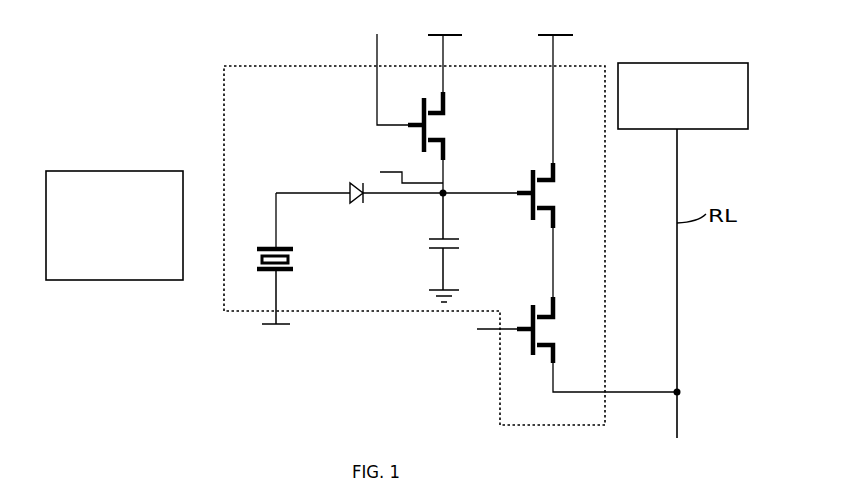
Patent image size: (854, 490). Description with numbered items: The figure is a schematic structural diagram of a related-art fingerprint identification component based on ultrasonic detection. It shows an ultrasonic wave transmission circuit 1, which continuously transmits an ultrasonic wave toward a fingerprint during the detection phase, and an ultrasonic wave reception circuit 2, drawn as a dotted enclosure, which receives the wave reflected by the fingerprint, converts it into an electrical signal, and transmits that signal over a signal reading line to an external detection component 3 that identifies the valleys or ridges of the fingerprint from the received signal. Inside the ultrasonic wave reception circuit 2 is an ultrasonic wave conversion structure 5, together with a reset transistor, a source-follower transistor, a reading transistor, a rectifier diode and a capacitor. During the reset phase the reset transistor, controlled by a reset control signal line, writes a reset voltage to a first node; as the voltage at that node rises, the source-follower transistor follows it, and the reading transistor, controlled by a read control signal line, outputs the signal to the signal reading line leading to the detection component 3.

The ultrasonic wave transmission circuit 1 is at (86, 170).
The ultrasonic wave reception circuit 2 is at (450, 219).
The detection component 3 is at (681, 63).
The ultrasonic wave conversion structure 5 is at (297, 265).